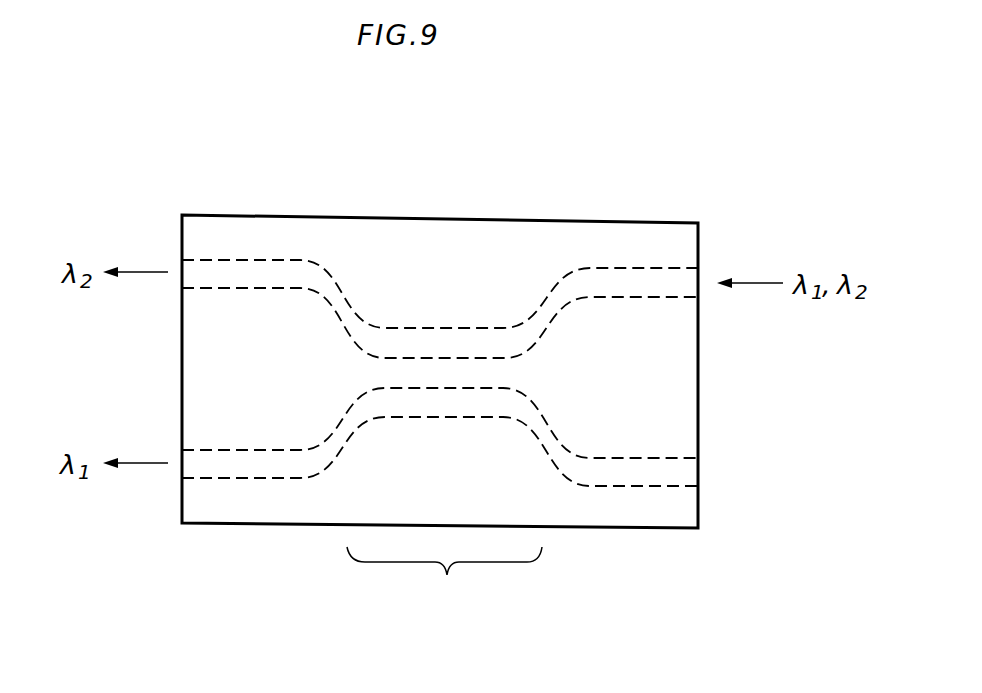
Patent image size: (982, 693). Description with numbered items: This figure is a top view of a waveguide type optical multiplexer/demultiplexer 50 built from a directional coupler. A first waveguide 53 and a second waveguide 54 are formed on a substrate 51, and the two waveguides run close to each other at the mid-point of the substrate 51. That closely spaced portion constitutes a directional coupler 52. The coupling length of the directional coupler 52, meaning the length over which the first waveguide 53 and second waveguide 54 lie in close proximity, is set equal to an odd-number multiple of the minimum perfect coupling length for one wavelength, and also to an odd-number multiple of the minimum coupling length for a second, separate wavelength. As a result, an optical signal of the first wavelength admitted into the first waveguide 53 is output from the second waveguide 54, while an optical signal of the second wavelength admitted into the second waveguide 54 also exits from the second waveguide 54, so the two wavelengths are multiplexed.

The waveguide type optical multiplexer/demultiplexer 50 is at (250, 213).
The substrate 51 is at (492, 218).
The directional coupler 52 is at (420, 565).
The first waveguide 53 is at (630, 283).
The second waveguide 54 is at (621, 470).